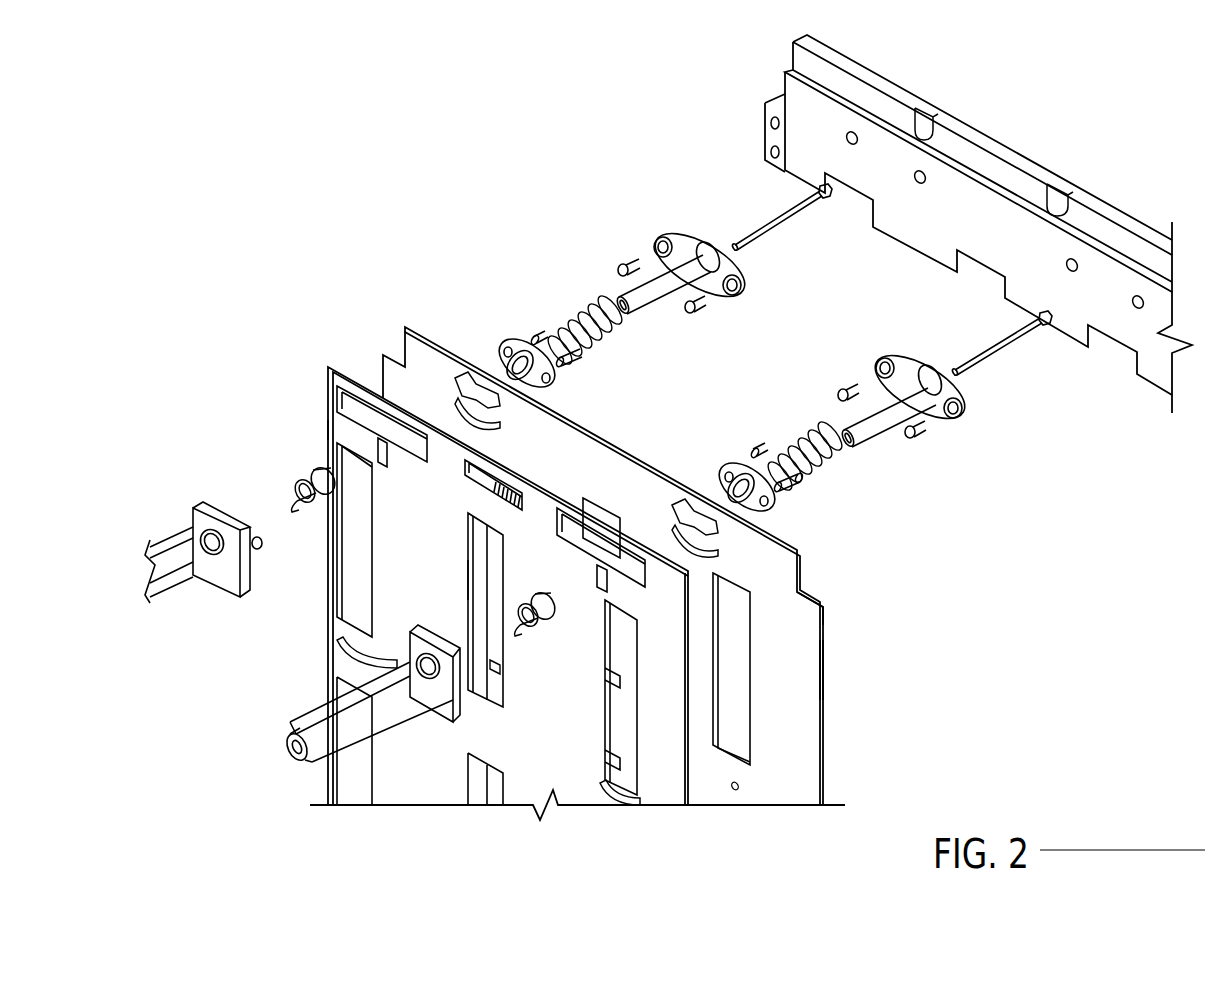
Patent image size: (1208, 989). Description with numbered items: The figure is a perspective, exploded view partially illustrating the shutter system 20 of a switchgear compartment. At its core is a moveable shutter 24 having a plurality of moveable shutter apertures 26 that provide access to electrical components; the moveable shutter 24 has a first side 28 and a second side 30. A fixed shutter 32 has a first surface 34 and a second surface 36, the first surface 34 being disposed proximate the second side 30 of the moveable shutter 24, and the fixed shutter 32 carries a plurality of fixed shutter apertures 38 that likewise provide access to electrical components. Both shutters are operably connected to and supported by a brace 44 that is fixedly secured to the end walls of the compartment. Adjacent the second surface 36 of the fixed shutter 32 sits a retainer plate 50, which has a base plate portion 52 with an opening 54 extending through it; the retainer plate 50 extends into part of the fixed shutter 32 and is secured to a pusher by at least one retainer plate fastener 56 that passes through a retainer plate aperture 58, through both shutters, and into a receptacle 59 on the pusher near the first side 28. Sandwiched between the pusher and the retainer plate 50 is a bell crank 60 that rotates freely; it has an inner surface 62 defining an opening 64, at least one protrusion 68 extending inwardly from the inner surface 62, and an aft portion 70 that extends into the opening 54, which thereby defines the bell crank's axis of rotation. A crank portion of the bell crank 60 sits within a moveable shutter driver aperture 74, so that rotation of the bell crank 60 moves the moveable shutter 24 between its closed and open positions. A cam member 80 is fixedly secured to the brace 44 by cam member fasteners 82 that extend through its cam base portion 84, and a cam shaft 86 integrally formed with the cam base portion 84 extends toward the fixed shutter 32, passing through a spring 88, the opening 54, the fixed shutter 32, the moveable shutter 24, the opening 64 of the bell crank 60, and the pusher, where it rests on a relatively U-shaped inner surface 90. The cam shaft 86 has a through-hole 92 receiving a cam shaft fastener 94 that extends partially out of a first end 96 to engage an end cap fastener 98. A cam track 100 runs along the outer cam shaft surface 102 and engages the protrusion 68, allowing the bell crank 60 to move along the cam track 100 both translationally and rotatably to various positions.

The shutter system 20 is at (452, 207).
The moveable shutter 24 is at (331, 428).
The moveable shutter apertures 26 is at (348, 588).
The first side 28 is at (410, 555).
The second side 30 is at (383, 375).
The fixed shutter 32 is at (832, 712).
The first surface 34 is at (805, 652).
The second surface 36 is at (830, 617).
The fixed shutter apertures 38 is at (480, 560).
The brace 44 is at (988, 212).
The retainer plate 50 is at (750, 466).
The base plate portion 52 is at (558, 373).
The opening 54 is at (535, 352).
The retainer plate fastener 56 is at (796, 482).
The retainer plate aperture 58 is at (770, 500).
The receptacle 59 is at (490, 668).
The bell crank 60 is at (282, 462).
The inner surface 62 is at (300, 505).
The opening 64 is at (536, 626).
The protrusion 68 is at (285, 462).
The aft portion 70 is at (294, 471).
The moveable shutter driver aperture 74 is at (385, 460).
The cam member 80 is at (713, 238).
The cam member fasteners 82 is at (700, 312).
The cam base portion 84 is at (750, 268).
The cam shaft 86 is at (910, 433).
The spring 88 is at (796, 434).
The U-shaped inner surface 90 is at (360, 722).
The through-hole 92 is at (630, 300).
The cam shaft fastener 94 is at (762, 215).
The first end 96 is at (861, 444).
The end cap fastener 98 is at (286, 741).
The cam track 100 is at (640, 300).
The outer cam shaft surface 102 is at (860, 392).